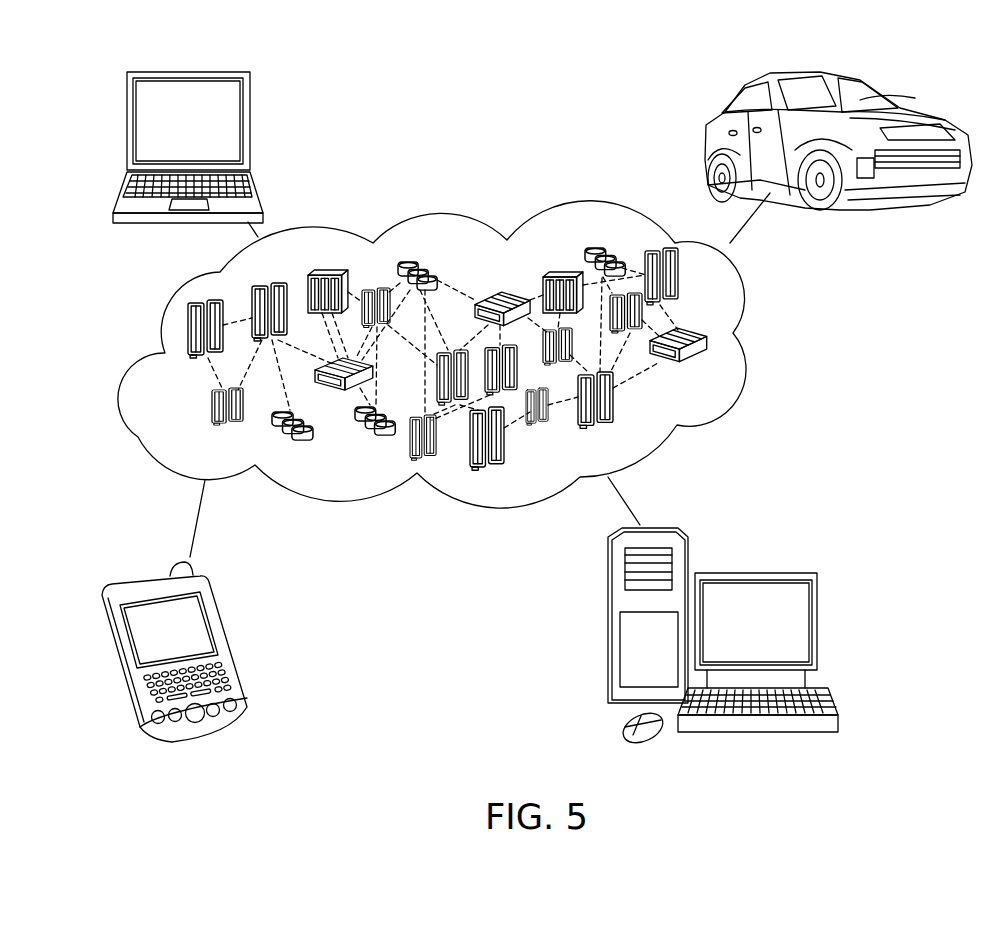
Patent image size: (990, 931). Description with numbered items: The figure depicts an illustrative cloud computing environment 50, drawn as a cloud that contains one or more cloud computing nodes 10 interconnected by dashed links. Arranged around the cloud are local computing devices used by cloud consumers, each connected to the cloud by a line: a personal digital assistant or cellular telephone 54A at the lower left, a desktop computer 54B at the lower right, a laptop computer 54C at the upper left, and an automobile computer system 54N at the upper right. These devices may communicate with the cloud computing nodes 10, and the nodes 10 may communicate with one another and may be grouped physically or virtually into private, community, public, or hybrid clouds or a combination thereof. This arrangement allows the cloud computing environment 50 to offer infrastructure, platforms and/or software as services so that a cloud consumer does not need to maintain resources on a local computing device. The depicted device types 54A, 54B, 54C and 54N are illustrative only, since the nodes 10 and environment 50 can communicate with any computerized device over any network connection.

The cloud computing nodes 10 is at (730, 386).
The cloud computing environment 50 is at (772, 283).
The personal digital assistant or cellular telephone 54A is at (222, 620).
The desktop computer 54B is at (817, 622).
The laptop computer 54C is at (252, 125).
The automobile computer system 54N is at (887, 93).